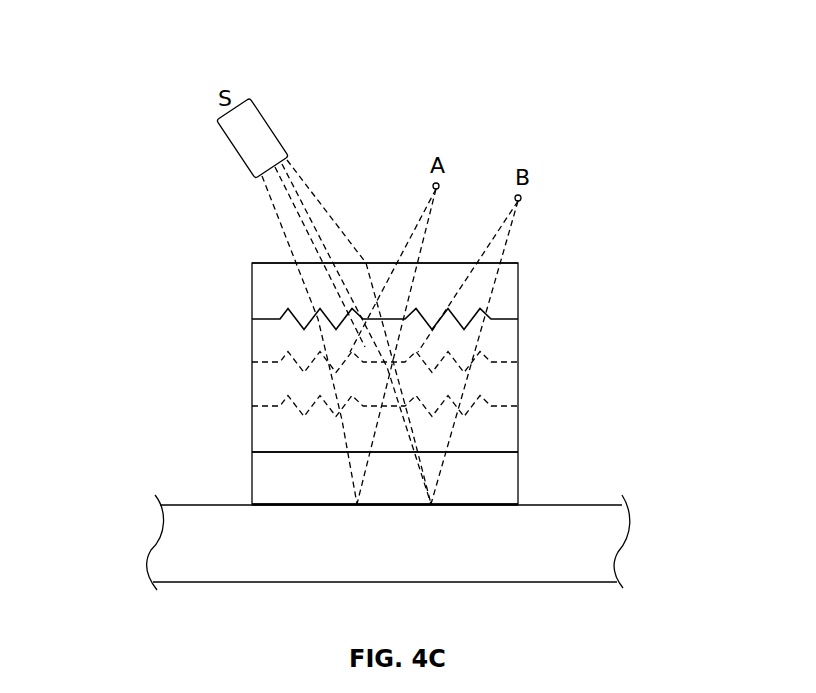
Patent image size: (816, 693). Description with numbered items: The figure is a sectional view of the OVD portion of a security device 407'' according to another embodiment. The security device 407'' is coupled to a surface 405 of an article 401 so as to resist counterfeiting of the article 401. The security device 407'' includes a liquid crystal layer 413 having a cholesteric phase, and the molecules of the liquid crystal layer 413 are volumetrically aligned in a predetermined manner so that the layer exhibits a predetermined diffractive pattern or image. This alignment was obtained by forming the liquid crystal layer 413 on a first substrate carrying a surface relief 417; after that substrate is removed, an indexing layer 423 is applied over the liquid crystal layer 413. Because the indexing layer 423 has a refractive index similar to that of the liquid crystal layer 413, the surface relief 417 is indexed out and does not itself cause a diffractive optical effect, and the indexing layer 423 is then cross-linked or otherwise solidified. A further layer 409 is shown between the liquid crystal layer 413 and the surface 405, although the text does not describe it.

The article 401 is at (158, 478).
The surface 405 is at (610, 503).
The security device 407'' is at (329, 383).
The bottom layer 409 is at (518, 476).
The liquid crystal layer 413 is at (528, 320).
The surface relief 417 is at (282, 312).
The indexing layer 423 is at (518, 286).